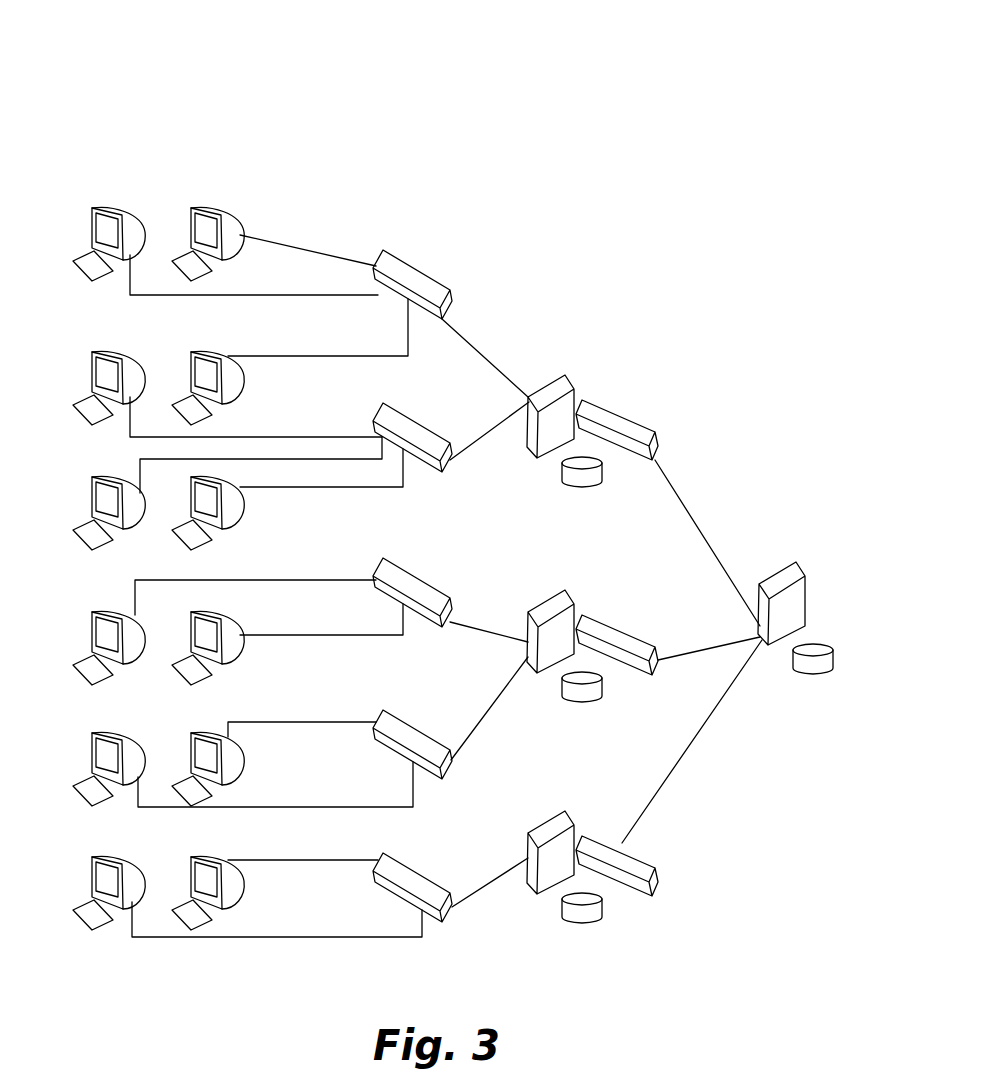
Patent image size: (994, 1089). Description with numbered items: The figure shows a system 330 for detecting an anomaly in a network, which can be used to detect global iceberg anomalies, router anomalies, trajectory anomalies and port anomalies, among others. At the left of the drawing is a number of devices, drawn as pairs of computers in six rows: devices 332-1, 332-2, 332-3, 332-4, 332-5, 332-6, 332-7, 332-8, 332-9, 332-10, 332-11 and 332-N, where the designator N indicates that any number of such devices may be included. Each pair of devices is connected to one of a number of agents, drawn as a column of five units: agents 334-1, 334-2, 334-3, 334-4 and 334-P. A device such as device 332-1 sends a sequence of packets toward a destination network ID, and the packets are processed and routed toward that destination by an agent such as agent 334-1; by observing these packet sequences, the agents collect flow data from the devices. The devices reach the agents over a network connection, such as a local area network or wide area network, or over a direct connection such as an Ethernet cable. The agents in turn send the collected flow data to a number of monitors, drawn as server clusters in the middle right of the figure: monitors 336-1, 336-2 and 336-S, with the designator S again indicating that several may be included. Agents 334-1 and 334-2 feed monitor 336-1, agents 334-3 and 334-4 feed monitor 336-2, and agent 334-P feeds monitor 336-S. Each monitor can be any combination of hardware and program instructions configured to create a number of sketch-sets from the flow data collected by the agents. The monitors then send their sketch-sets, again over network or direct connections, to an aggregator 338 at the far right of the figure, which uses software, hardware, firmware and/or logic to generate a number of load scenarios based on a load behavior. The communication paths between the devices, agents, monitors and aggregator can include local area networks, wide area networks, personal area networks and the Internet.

The system 330 is at (97, 62).
The device 332-1 is at (92, 210).
The device 332-2 is at (240, 256).
The device 332-3 is at (92, 354).
The device 332-4 is at (240, 400).
The device 332-5 is at (92, 479).
The device 332-6 is at (240, 525).
The device 332-7 is at (92, 614).
The device 332-8 is at (240, 660).
The device 332-9 is at (92, 735).
The device 332-10 is at (240, 781).
The device 332-11 is at (92, 859).
The device 332-N is at (240, 905).
The agent 334-1 is at (413, 265).
The agent 334-2 is at (413, 418).
The agent 334-3 is at (413, 573).
The agent 334-4 is at (413, 725).
The agent 334-P is at (413, 868).
The monitor 336-1 is at (574, 384).
The monitor 336-2 is at (574, 599).
The monitor 336-S is at (574, 820).
The aggregator 338 is at (804, 573).